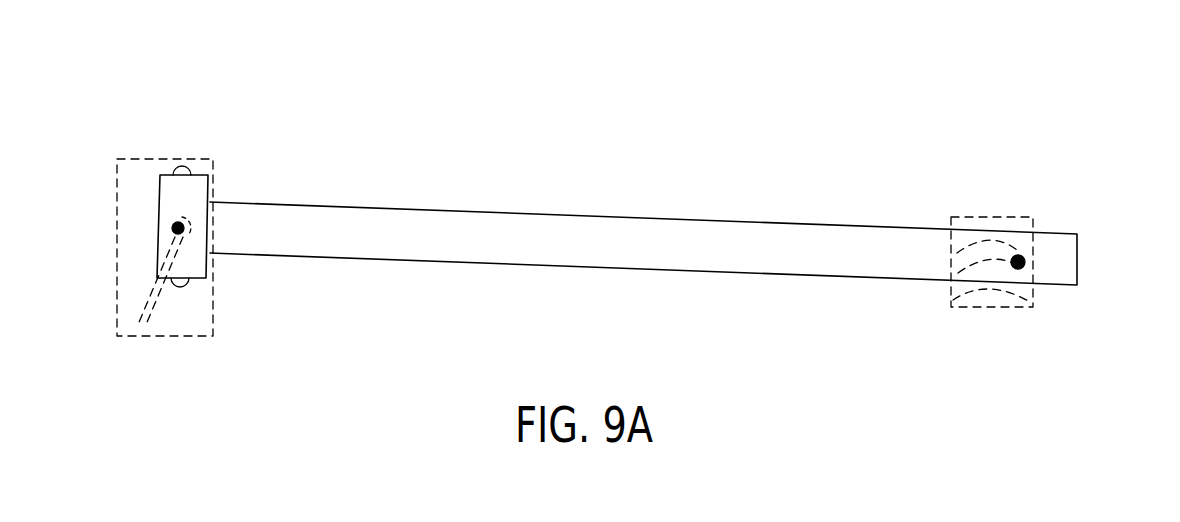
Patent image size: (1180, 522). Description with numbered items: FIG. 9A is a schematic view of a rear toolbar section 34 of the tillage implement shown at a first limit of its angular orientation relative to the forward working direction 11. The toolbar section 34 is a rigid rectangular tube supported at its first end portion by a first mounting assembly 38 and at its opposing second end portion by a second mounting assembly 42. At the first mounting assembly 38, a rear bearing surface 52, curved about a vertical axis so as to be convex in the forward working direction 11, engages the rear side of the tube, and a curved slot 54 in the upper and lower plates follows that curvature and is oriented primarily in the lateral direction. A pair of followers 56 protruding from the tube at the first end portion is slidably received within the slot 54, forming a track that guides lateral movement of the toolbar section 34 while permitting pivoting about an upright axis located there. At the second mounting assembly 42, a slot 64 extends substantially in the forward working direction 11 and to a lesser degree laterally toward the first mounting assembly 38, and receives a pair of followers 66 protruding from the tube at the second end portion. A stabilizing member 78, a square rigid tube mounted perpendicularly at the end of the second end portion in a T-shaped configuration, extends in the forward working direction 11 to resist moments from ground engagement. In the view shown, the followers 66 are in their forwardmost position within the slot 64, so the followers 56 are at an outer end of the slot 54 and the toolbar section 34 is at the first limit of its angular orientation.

The forward working direction 11 is at (582, 102).
The toolbar section 34 is at (681, 166).
The first mounting assembly 38 is at (1000, 153).
The second mounting assembly 42 is at (97, 161).
The rear bearing surface 52 is at (1036, 302).
The slot 54 is at (915, 262).
The followers 56 is at (1023, 257).
The slot 64 is at (136, 341).
The followers 66 is at (177, 225).
The stabilizing member 78 is at (158, 202).